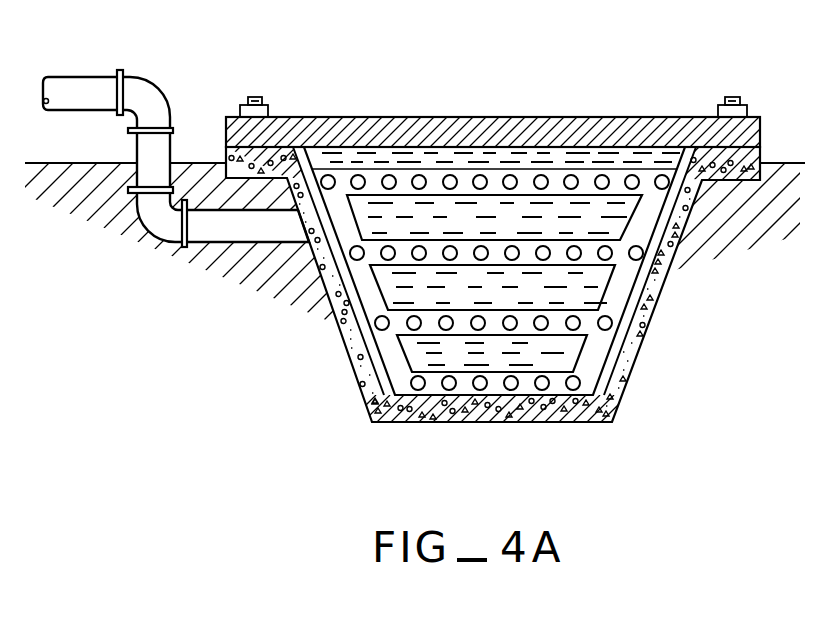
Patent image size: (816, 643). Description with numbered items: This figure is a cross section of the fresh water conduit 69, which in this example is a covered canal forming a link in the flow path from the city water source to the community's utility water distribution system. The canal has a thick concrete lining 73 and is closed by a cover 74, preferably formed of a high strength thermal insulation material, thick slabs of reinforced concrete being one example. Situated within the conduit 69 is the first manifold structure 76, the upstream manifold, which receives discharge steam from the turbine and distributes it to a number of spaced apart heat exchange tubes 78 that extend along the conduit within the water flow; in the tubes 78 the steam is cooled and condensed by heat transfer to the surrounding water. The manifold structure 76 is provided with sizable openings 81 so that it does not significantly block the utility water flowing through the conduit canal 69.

The fresh water conduit 69 is at (566, 102).
The concrete lining 73 is at (355, 363).
The cover 74 is at (441, 127).
The first manifold structure 76 is at (361, 317).
The heat exchange tubes 78 is at (511, 261).
The openings 81 is at (627, 229).